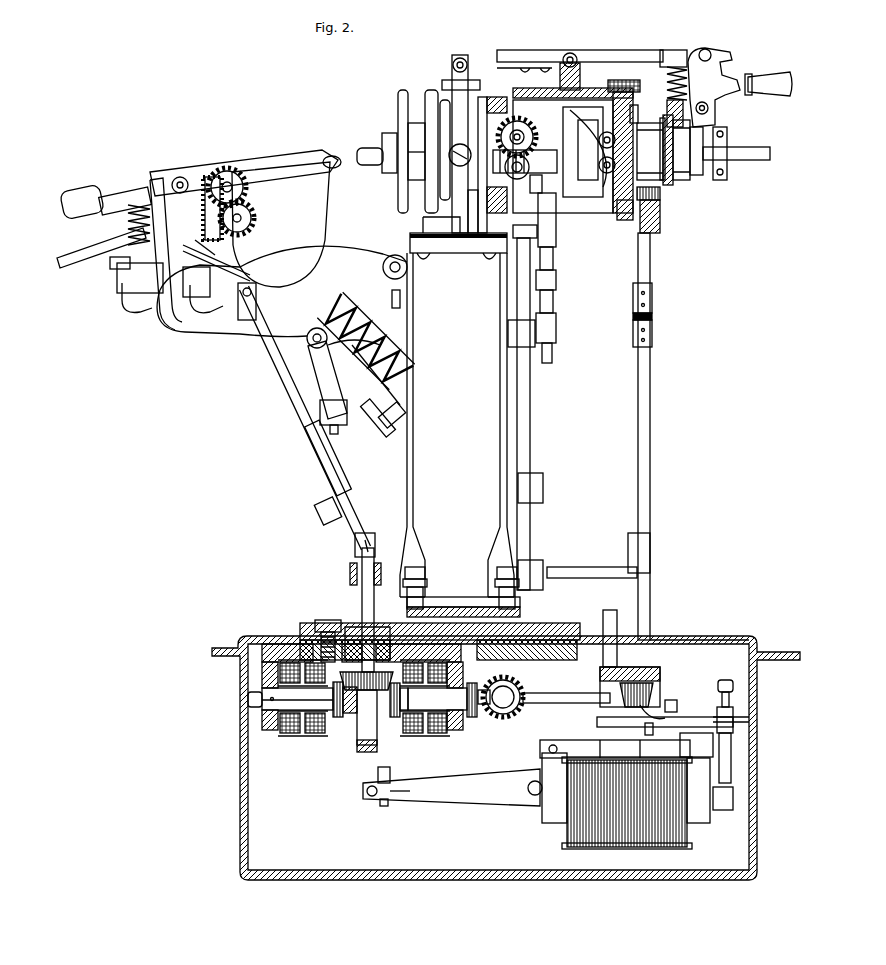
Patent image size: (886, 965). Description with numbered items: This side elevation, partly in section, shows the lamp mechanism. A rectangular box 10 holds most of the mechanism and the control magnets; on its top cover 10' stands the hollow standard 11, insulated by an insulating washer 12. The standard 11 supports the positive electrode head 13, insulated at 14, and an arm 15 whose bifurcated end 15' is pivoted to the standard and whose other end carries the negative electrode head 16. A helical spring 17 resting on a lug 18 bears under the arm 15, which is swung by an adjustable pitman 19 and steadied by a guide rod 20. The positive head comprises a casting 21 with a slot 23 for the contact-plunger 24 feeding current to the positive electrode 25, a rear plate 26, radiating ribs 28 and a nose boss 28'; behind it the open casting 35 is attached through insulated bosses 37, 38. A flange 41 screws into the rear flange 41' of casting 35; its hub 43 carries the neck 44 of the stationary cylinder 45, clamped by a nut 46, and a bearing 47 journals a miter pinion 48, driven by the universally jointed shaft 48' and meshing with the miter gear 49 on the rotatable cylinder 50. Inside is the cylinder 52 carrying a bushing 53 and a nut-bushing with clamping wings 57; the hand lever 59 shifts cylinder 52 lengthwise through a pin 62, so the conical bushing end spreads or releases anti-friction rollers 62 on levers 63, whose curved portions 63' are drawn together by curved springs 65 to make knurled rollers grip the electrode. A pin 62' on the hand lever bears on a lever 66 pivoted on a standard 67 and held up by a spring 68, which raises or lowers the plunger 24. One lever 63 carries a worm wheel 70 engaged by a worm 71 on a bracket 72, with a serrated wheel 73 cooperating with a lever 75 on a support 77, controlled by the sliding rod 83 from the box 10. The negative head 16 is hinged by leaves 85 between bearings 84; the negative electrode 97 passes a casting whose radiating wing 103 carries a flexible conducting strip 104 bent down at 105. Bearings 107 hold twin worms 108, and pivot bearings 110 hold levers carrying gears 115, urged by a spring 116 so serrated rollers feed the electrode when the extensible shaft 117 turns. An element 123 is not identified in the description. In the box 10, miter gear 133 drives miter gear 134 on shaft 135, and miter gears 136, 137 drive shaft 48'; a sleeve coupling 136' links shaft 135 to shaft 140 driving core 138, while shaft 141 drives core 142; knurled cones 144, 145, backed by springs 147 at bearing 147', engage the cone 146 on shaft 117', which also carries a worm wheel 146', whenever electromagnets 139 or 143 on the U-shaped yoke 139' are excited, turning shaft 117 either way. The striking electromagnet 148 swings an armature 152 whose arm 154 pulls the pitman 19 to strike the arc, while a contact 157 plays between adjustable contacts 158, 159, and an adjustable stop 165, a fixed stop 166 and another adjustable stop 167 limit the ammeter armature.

The housing 10 is at (506, 758).
The housing top wall 10' is at (699, 622).
The column 11 is at (459, 431).
The base plate 12 is at (520, 614).
The frame bar 13 is at (580, 48).
The bracket plate 14 is at (410, 240).
The arm 15 is at (286, 318).
The pivot 15' is at (376, 267).
The trip mechanism 16 is at (244, 165).
The spring 17 is at (400, 350).
The bolt 18 is at (387, 400).
The link 19 is at (327, 381).
The rod 20 is at (368, 347).
The bracket 21 is at (428, 217).
The lever 23 is at (447, 108).
The screw 24 is at (477, 92).
The shaft 25 is at (368, 148).
The arm 26 is at (473, 195).
The pulley 28 is at (403, 151).
The hub 28' is at (373, 158).
The plate 35 is at (600, 88).
The bracket 37 is at (515, 343).
The post 38 is at (477, 165).
The sleeve 41 is at (593, 140).
The cap 41' is at (630, 77).
The collar 43 is at (670, 185).
The nut 44 is at (700, 175).
The plate 45 is at (663, 123).
The nut 46 is at (686, 180).
The bushing 47 is at (624, 222).
The gear 48 is at (665, 209).
The rod 48' is at (617, 450).
The washer 49 is at (637, 112).
The sleeve 50 is at (650, 151).
The shaft 52 is at (727, 160).
The bolt 53 is at (702, 102).
The block 57 is at (728, 134).
The handle 59 is at (749, 78).
The lever 62 is at (717, 87).
The pivot bolt 62' is at (708, 44).
The housing 63 is at (565, 152).
The bearing 63' is at (606, 127).
The roller 65 is at (605, 159).
The bolt 66 is at (592, 57).
The block 67 is at (560, 80).
The spring 68 is at (670, 62).
The gear 70 is at (517, 137).
The disc 71 is at (507, 176).
The bolt 72 is at (529, 154).
The block 73 is at (532, 191).
The rod 75 is at (553, 255).
The link 77 is at (552, 232).
The rod end 83 is at (556, 352).
The yoke 84 is at (122, 292).
The block 85 is at (138, 300).
The lever 97 is at (324, 156).
The casing 103 is at (281, 224).
The rod 104 is at (213, 258).
The link 105 is at (202, 247).
The rack 107 is at (207, 185).
The pivot 108 is at (182, 176).
The bar 110 is at (160, 180).
The gear 115 is at (230, 170).
The handle 116 is at (127, 230).
The rod 117 is at (305, 418).
The shaft 117' is at (347, 602).
The bolt 123 is at (112, 265).
The bevel gear 133 is at (515, 712).
The bevel gear 134 is at (512, 675).
The shaft 135 is at (568, 692).
The bar 136 is at (665, 736).
The hub 136' is at (479, 719).
The gear housing 137 is at (660, 683).
The coil 138 is at (415, 735).
The coil 139 is at (437, 709).
The gear housing 139' is at (358, 666).
The shaft 140 is at (472, 683).
The shaft 141 is at (250, 698).
The bearing 142 is at (268, 705).
The coil 143 is at (290, 735).
The gear 144 is at (396, 718).
The coil 145 is at (316, 735).
The sleeve 146 is at (374, 611).
The bevel gear 146' is at (361, 647).
The gear 147 is at (365, 717).
The sleeve 147' is at (371, 721).
The solenoid coil 148 is at (650, 852).
The bracket 152 is at (548, 822).
The lever 154 is at (452, 786).
The guide 157 is at (733, 737).
The knob 158 is at (733, 688).
The nut 159 is at (733, 795).
The arm 165 is at (675, 702).
The block 166 is at (696, 745).
The pin 167 is at (650, 730).